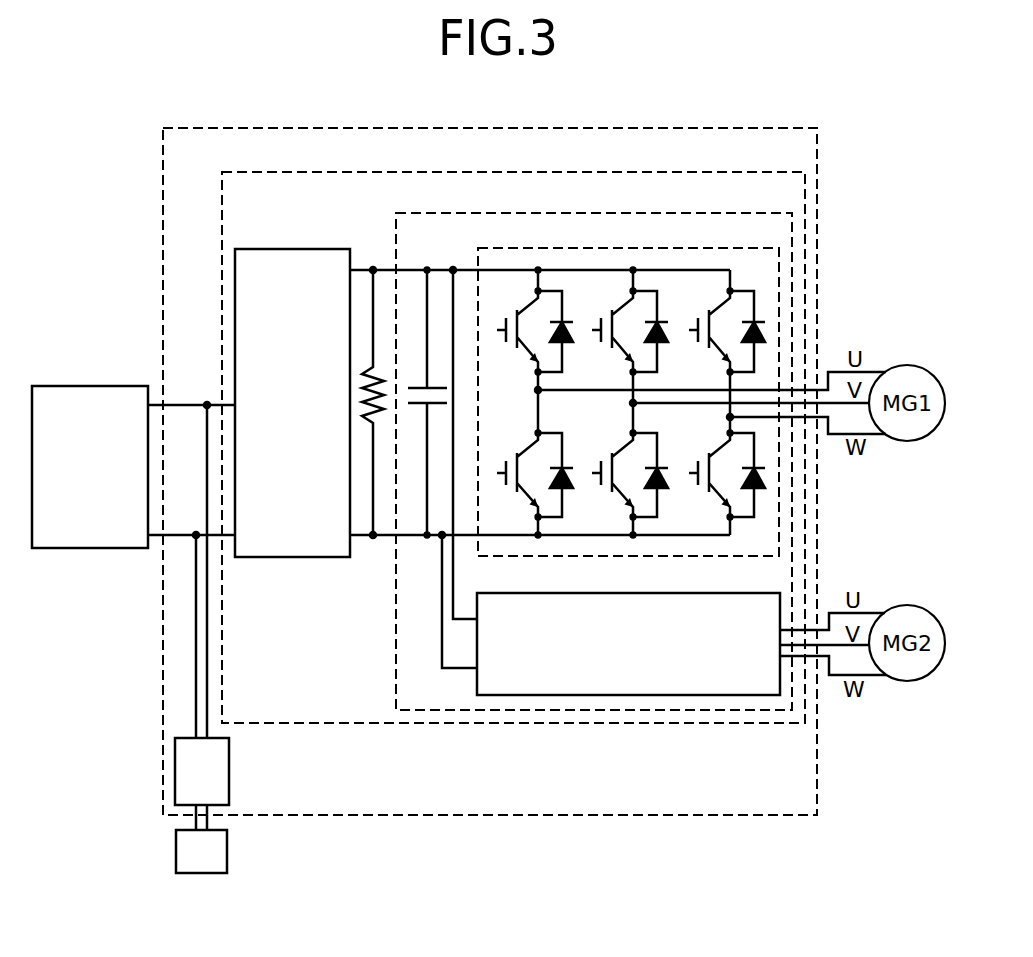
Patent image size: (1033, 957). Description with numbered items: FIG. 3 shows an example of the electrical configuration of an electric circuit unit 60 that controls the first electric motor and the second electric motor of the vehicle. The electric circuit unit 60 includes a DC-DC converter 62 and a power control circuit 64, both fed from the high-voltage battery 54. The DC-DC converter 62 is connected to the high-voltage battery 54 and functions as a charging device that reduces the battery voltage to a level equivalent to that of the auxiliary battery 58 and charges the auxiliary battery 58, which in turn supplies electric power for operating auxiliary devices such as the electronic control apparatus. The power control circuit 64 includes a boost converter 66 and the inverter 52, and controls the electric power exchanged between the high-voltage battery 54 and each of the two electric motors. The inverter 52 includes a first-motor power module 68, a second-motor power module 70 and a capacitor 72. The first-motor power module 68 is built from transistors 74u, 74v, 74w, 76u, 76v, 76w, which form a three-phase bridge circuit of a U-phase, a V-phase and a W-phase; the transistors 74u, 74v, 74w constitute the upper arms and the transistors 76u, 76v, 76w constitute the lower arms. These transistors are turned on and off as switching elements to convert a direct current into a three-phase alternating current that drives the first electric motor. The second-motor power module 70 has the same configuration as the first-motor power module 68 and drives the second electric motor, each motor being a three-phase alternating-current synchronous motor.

The electric circuit unit 60 is at (209, 127).
The power control circuit 64 is at (258, 170).
The inverter 52 is at (725, 212).
The MG1 power module 68 is at (723, 248).
The high-voltage battery 54 is at (79, 400).
The boost converter 66 is at (263, 258).
The DC-DC converter 62 is at (215, 787).
The auxiliary battery 58 is at (188, 859).
The capacitor 72 is at (417, 379).
The transistor 74u is at (505, 321).
The transistor 74v is at (600, 321).
The transistor 74w is at (697, 321).
The transistor 76u is at (505, 484).
The transistor 76v is at (600, 484).
The transistor 76w is at (697, 484).
The MG2 power module 70 is at (727, 603).